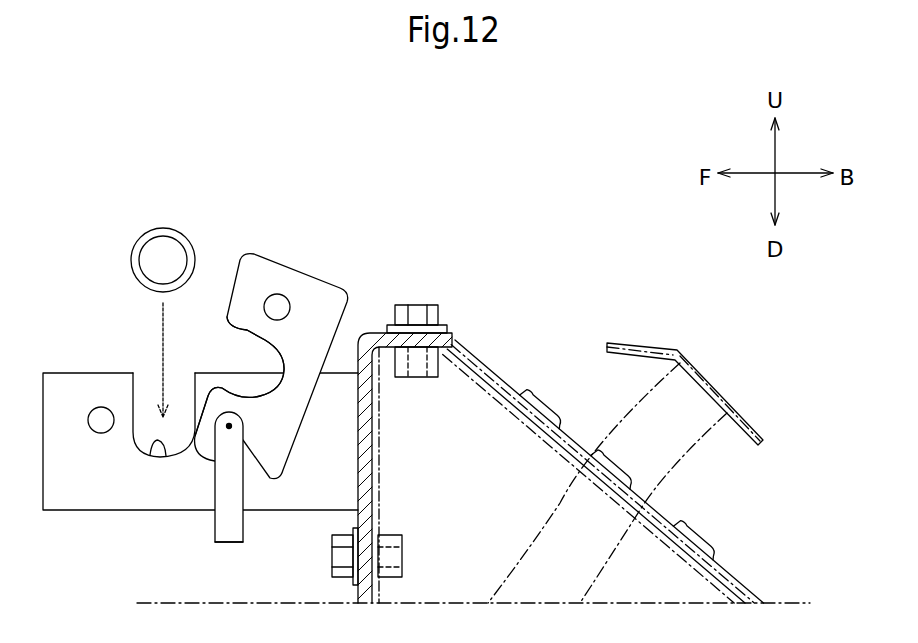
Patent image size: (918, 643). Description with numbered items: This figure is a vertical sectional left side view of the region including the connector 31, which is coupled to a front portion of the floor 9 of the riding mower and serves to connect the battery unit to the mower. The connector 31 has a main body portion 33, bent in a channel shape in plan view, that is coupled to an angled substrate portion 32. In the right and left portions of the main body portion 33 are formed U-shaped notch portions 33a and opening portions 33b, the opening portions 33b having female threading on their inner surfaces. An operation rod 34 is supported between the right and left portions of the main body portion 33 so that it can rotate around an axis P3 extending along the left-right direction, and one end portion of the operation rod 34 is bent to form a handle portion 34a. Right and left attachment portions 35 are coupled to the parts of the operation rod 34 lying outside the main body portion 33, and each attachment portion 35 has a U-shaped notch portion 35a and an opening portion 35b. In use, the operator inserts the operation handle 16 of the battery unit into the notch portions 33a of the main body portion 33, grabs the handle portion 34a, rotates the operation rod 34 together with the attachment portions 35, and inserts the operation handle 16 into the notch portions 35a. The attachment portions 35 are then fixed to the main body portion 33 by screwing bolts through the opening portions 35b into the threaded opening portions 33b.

The floor 9 is at (503, 380).
The operation handle 16 is at (163, 228).
The connector 31 is at (274, 382).
The substrate portion 32 is at (380, 432).
The main body portion 33 is at (80, 483).
The notch portion 33a is at (150, 452).
The opening portion 33b is at (101, 407).
The operation rod 34 is at (224, 447).
The handle portion 34a is at (230, 532).
The attachment portion 35 is at (298, 273).
The notch portion 35a is at (280, 353).
The opening portion 35b is at (276, 294).
The axis P3 is at (232, 428).